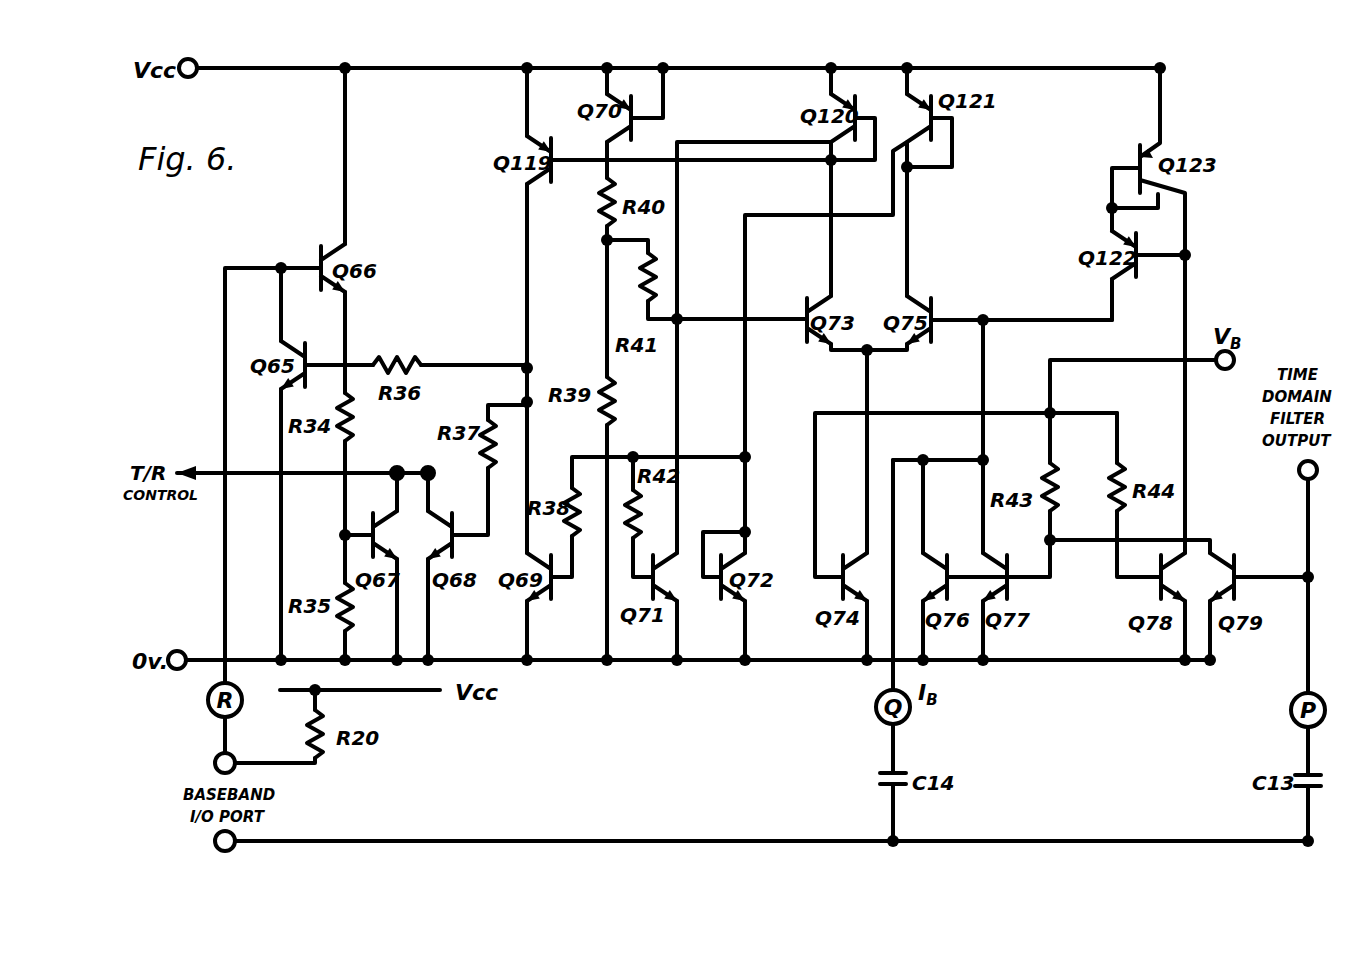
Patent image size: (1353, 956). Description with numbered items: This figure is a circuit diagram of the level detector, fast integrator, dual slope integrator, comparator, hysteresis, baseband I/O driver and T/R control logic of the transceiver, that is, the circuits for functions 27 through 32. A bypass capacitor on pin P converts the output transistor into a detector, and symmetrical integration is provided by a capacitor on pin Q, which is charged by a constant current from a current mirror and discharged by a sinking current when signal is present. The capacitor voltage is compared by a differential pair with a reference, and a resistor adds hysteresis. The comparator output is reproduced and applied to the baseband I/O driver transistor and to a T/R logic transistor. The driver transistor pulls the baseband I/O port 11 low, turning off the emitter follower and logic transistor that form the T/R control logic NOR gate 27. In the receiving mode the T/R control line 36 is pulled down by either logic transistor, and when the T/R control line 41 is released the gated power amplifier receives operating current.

The T/R control line 41 is at (352, 474).
The T/R control line 36 is at (226, 728).
The baseband I/O port 11 is at (196, 769).
The T/R control logic NOR gate 27 is at (1120, 887).
The circuit function 32 is at (1163, 887).